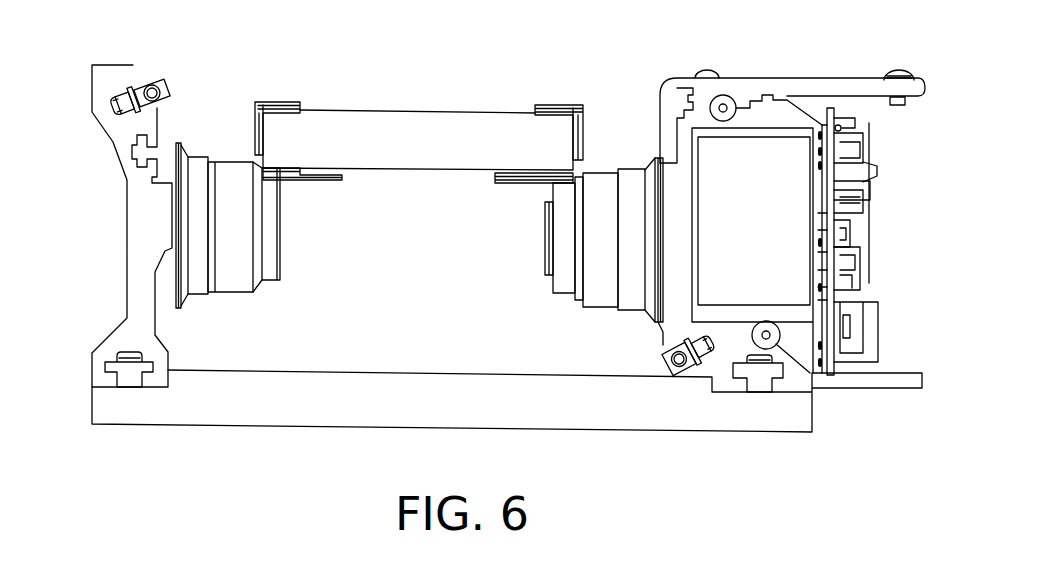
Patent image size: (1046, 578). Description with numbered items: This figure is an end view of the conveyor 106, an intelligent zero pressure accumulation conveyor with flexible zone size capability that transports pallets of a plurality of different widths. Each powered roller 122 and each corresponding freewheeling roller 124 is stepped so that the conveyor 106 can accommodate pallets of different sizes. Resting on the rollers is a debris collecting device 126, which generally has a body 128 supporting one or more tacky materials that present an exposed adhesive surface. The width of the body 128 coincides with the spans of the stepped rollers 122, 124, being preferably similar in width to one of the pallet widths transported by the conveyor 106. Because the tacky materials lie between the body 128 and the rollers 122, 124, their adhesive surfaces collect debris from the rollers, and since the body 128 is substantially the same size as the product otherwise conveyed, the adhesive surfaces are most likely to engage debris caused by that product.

The conveyor 106 is at (782, 78).
The powered roller 122 is at (548, 283).
The freewheeling roller 124 is at (283, 278).
The debris collecting device 126 is at (414, 133).
The body 128 is at (413, 152).